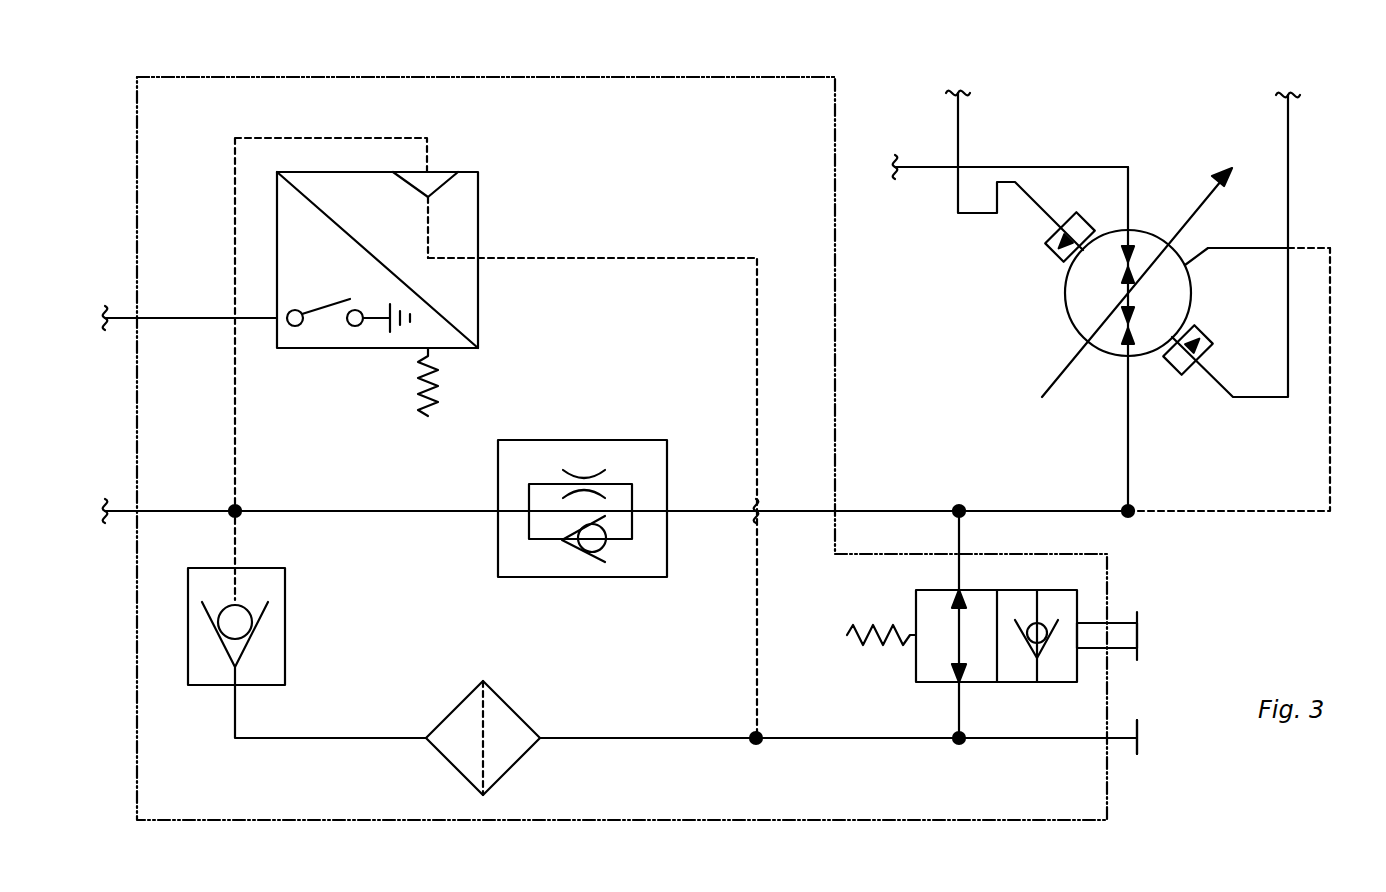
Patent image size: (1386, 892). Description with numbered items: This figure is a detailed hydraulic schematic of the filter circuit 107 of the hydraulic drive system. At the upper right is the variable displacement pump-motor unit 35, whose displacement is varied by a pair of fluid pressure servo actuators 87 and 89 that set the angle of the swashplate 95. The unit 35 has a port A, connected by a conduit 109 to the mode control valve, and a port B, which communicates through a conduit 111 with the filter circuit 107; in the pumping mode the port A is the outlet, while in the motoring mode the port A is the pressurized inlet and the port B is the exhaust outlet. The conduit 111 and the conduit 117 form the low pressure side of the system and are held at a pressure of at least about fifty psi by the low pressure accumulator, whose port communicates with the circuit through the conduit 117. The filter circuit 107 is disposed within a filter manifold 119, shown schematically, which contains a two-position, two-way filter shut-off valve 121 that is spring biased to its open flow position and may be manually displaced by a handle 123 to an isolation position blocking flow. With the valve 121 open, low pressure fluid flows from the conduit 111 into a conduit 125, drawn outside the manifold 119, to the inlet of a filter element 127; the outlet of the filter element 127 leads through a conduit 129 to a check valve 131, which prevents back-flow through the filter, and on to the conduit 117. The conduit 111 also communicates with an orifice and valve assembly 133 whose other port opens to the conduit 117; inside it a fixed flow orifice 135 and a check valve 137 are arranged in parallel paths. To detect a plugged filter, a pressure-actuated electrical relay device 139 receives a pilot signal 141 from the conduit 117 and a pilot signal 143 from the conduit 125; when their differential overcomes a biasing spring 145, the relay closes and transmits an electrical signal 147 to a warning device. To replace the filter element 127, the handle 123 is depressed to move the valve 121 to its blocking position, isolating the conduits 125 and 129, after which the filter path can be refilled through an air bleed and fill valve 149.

The filter circuit 107 is at (627, 72).
The conduit 109 is at (938, 167).
The conduit 111 is at (1040, 511).
The conduit 117 is at (180, 511).
The filter manifold 119 is at (680, 820).
The filter shut-off valve 121 is at (916, 612).
The handle 123 is at (1137, 637).
The conduit 125 is at (818, 738).
The filter element 127 is at (515, 690).
The conduit 129 is at (320, 738).
The check valve 131 is at (285, 630).
The orifice and valve assembly 133 is at (633, 440).
The fixed flow orifice 135 is at (592, 475).
The check valve 137 is at (590, 545).
The pressure-actuated electrical relay device 139 is at (480, 215).
The pilot signal 141 is at (345, 138).
The pilot signal 143 is at (630, 258).
The biasing spring 145 is at (418, 388).
The electrical signal 147 is at (178, 318).
The air bleed and fill valve 149 is at (1137, 732).
The pump-motor unit 35 is at (1064, 307).
The servo actuator 87 is at (1197, 340).
The servo actuator 89 is at (1060, 262).
The swashplate 95 is at (1205, 195).
The port A is at (1135, 215).
The port B is at (1125, 360).